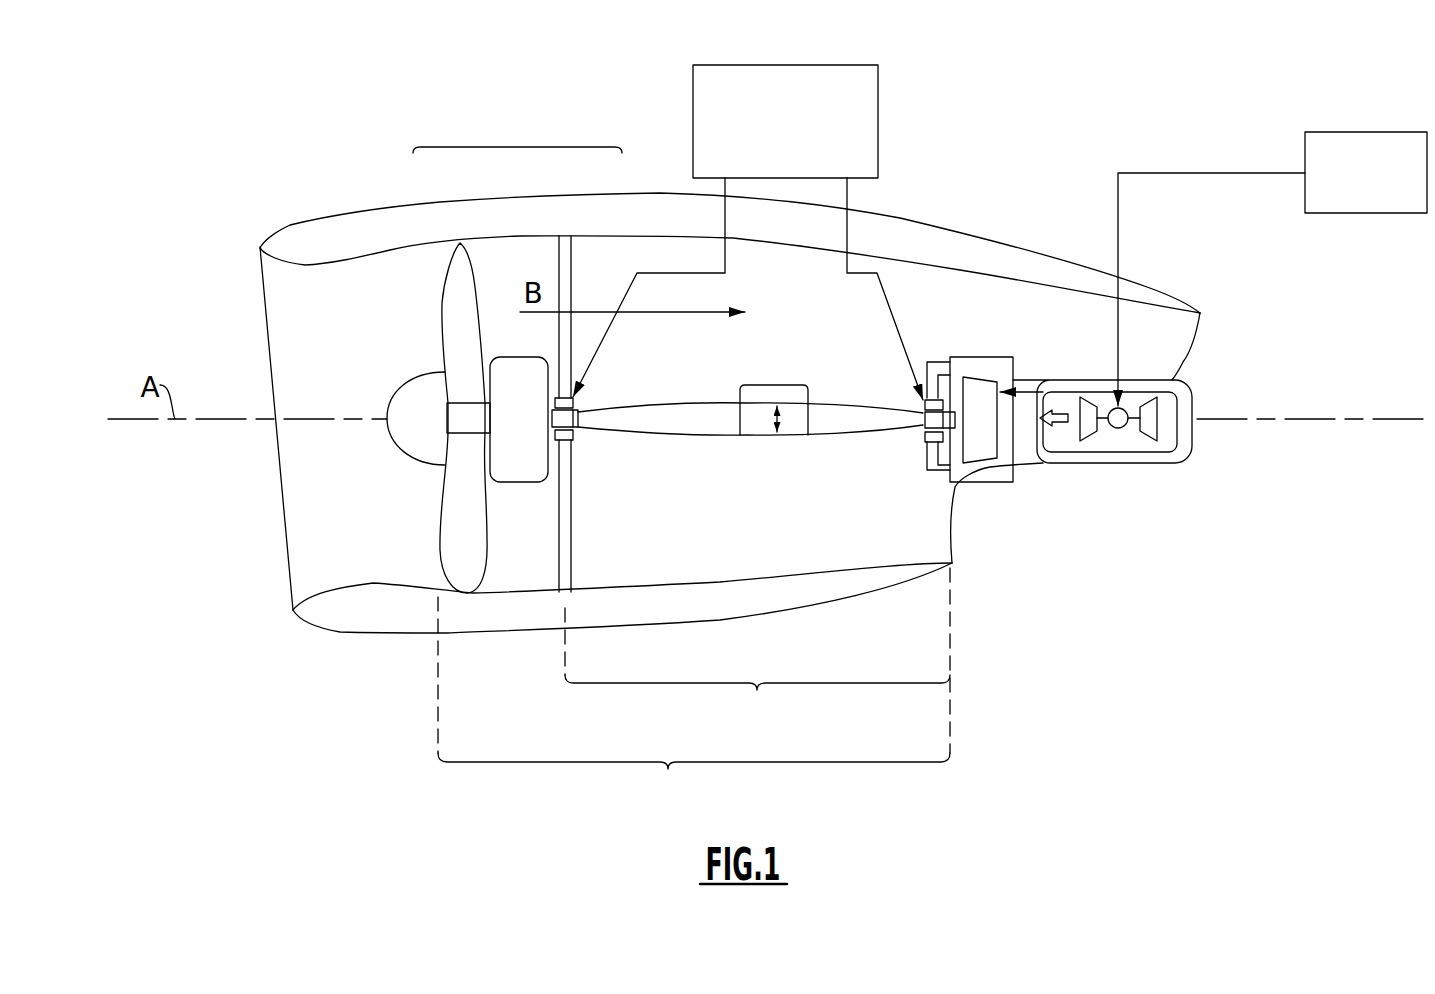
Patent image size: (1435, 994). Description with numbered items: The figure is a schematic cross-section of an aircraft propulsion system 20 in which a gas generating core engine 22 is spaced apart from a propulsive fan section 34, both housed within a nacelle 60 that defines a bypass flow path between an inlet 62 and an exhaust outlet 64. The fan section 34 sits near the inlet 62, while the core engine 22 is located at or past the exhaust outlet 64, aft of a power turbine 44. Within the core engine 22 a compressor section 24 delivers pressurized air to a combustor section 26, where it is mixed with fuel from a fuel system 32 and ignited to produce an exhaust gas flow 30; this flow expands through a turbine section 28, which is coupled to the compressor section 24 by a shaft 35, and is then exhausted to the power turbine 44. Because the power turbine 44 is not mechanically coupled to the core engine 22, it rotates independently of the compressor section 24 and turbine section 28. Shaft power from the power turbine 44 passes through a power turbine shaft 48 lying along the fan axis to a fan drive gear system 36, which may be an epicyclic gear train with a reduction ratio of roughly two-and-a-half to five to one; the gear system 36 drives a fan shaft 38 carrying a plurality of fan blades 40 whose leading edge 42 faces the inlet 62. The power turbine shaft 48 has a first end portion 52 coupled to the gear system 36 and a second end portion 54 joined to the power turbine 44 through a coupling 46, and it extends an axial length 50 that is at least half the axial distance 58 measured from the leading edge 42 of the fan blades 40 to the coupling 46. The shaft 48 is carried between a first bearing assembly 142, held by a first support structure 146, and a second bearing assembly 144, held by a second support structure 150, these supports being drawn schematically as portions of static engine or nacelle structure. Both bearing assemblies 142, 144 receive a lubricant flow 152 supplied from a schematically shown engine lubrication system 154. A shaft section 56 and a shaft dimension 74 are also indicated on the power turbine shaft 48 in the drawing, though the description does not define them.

The propulsion system 20 is at (1170, 124).
The core engine 22 is at (1193, 400).
The compressor section 24 is at (1152, 444).
The combustor section 26 is at (1119, 434).
The turbine section 28 is at (1088, 440).
The exhaust gas flow 30 is at (1058, 436).
The fuel system 32 is at (1375, 132).
The fan section 34 is at (517, 147).
The shaft 35 is at (1103, 434).
The fan drive gear system 36 is at (503, 437).
The fan shaft 38 is at (449, 418).
The fan blades 40 is at (466, 578).
The leading edge 42 is at (438, 562).
The power turbine 44 is at (975, 447).
The coupling 46 is at (962, 430).
The power turbine shaft 48 is at (722, 421).
The axial length 50 is at (757, 666).
The first end portion 52 is at (576, 400).
The second end portion 54 is at (924, 403).
The shaft section 56 is at (777, 385).
The axial distance 58 is at (694, 685).
The nacelle 60 is at (337, 612).
The inlet 62 is at (279, 458).
The exhaust outlet 64 is at (973, 547).
The shaft diameter 74 is at (774, 421).
The first bearing assembly 142 is at (581, 441).
The second bearing assembly 144 is at (917, 445).
The first support structure 146 is at (571, 544).
The second support structure 150 is at (933, 469).
The lubricant flow 152 is at (725, 263).
The engine lubrication system 154 is at (765, 168).